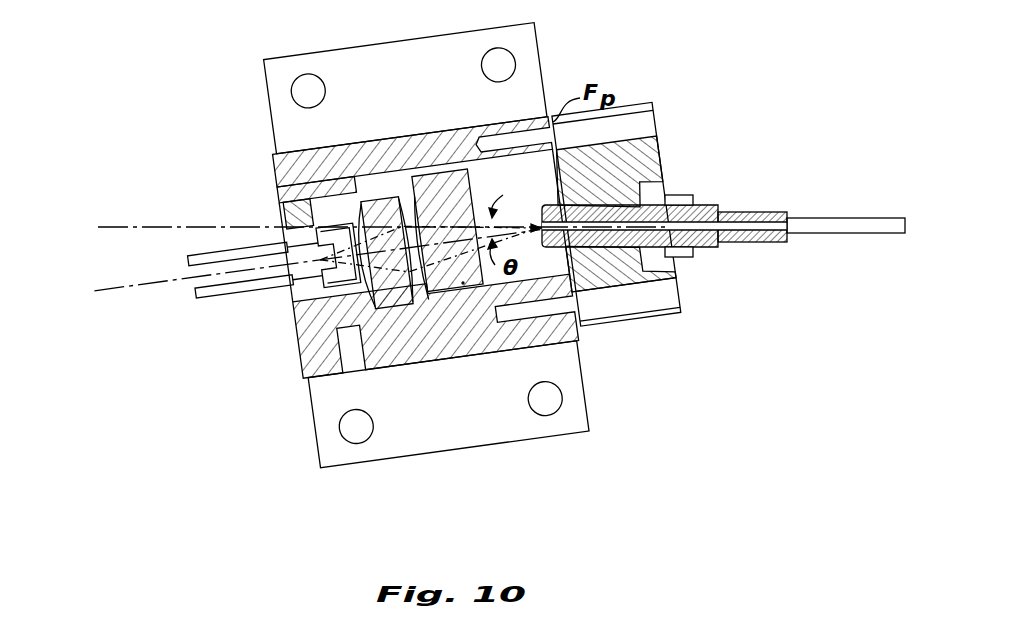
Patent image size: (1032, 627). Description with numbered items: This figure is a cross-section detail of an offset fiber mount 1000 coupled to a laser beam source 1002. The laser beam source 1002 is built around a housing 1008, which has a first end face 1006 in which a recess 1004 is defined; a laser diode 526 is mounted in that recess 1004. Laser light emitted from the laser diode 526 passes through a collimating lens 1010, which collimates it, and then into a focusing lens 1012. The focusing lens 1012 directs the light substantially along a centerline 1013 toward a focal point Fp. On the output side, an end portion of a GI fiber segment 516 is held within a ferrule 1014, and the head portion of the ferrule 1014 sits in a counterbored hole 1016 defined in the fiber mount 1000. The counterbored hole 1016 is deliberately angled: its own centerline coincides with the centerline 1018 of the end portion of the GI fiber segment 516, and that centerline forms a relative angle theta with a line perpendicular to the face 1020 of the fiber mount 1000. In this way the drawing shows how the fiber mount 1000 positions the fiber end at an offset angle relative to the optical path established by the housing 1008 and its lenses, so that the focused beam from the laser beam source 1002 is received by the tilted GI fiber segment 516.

The GI fiber segment 516 is at (848, 220).
The laser diode 526 is at (291, 287).
The fiber mount 1000 is at (662, 152).
The laser beam source 1002 is at (262, 470).
The recess 1004 is at (297, 182).
The first end face 1006 is at (298, 320).
The housing 1008 is at (515, 415).
The collimating lens 1010 is at (404, 300).
The focusing lens 1012 is at (561, 287).
The centerline 1013 is at (157, 284).
The ferrule 1014 is at (716, 205).
The counterbored hole 1016 is at (683, 313).
The centerline of end portion of GI fiber segment 1018 is at (178, 227).
The face of fiber mount 1020 is at (463, 283).